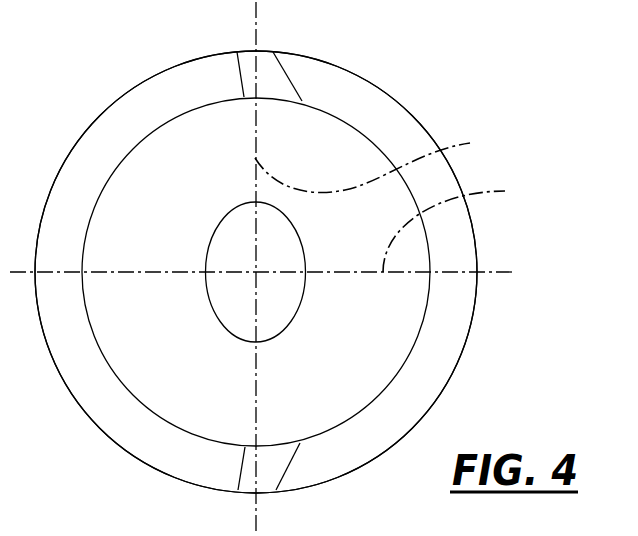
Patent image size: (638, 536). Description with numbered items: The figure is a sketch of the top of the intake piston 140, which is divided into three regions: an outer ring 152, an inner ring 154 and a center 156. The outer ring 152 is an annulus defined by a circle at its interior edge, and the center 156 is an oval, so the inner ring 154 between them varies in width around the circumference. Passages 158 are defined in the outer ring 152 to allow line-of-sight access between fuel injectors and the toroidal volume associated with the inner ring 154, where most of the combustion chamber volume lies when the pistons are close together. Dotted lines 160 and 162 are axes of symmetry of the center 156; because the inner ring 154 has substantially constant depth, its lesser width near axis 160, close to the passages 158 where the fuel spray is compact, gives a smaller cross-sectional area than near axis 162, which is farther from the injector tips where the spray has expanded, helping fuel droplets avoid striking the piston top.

The intake piston 140 is at (432, 121).
The outer ring 152 is at (458, 265).
The inner ring 154 is at (303, 160).
The center 156 is at (187, 196).
The passages 158 is at (265, 72).
The axis of symmetry 160 is at (388, 162).
The axis of symmetry 162 is at (472, 226).